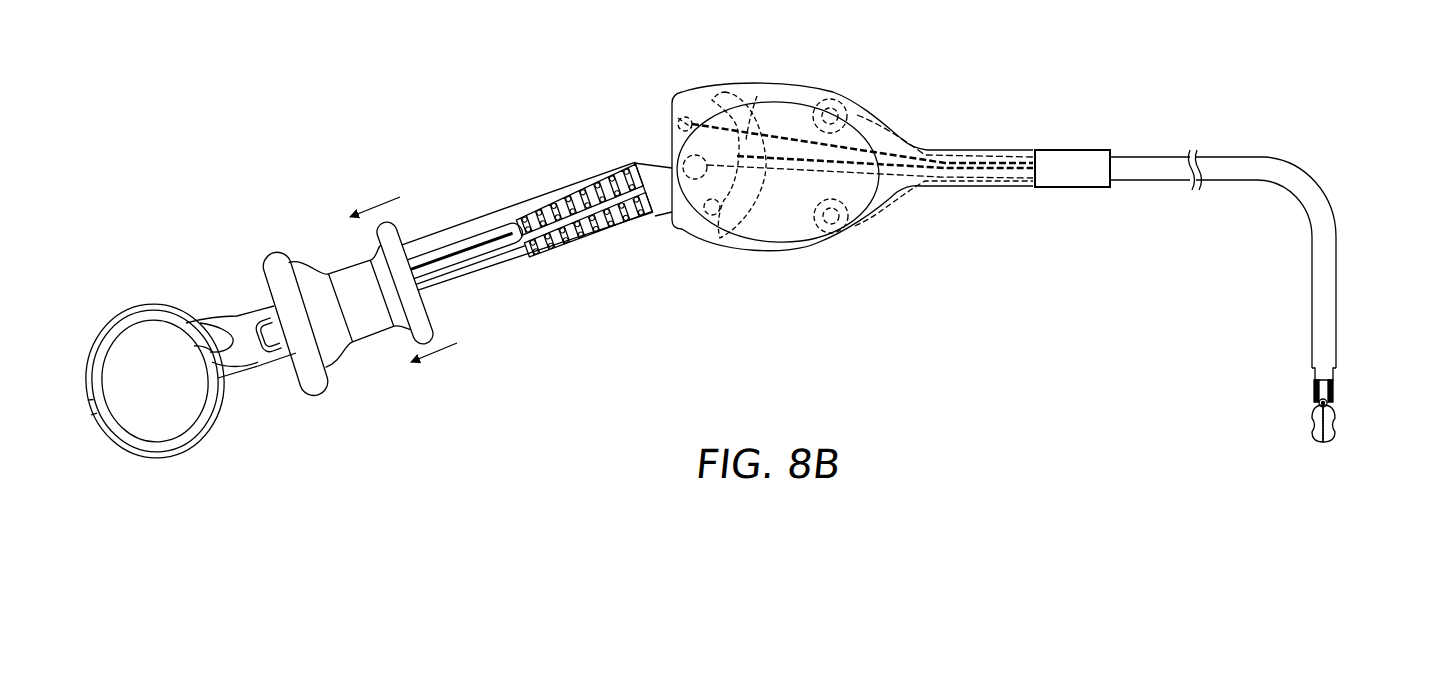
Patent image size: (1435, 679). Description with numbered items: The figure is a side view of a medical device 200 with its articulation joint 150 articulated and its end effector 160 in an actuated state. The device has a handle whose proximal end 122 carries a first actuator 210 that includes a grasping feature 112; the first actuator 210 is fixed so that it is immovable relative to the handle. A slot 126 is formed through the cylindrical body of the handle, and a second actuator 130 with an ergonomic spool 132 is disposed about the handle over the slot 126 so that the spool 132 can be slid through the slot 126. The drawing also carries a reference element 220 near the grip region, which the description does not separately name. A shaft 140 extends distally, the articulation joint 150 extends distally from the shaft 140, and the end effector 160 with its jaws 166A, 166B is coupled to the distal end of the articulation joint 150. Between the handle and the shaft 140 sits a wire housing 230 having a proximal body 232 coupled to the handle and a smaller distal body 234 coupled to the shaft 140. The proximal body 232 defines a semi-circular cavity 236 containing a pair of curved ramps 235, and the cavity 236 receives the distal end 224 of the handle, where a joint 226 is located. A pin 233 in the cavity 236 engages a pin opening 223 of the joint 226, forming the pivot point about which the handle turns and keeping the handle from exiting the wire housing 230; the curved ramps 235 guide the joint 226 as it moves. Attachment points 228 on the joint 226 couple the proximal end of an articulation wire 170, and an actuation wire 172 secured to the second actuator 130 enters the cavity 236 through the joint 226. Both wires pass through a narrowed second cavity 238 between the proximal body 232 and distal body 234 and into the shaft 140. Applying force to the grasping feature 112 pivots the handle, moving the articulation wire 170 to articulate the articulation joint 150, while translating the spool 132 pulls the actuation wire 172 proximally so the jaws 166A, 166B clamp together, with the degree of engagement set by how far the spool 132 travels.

The grasping feature 112 is at (186, 440).
The proximal end 122 is at (241, 342).
The slot 126 is at (268, 336).
The second actuator 130 is at (380, 390).
The spool 132 is at (295, 324).
The shaft 140 is at (1155, 157).
The articulation joint 150 is at (1236, 157).
The end effector 160 is at (1321, 418).
The jaw 166A is at (1335, 426).
The jaw 166B is at (1313, 426).
The articulation wire 170 is at (860, 128).
The actuation wire 172 is at (505, 236).
The medical device 200 is at (1266, 78).
The first actuator 210 is at (91, 323).
The grip tab 220 is at (295, 386).
The pin opening 223 is at (699, 186).
The distal end 224 is at (672, 208).
The joint 226 is at (768, 188).
The attachment points 228 is at (676, 118).
The wire housing 230 is at (856, 207).
The proximal body 232 is at (858, 238).
The pin 233 is at (681, 158).
The distal body 234 is at (1070, 150).
The curved ramps 235 is at (690, 113).
The cavity 236 is at (759, 94).
The second cavity 238 is at (903, 137).